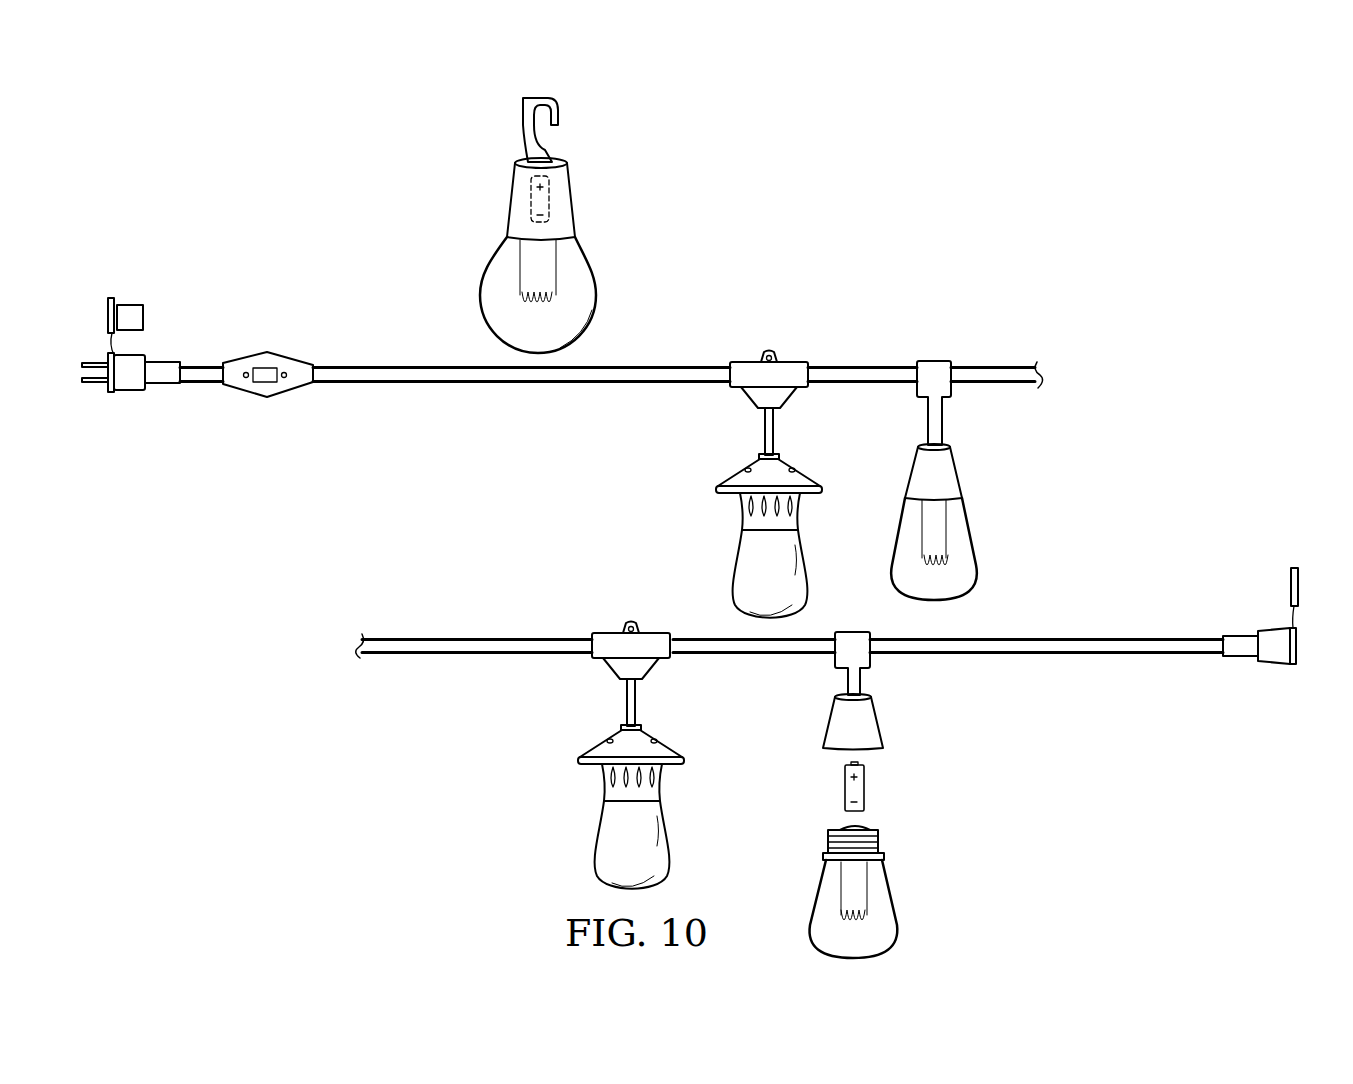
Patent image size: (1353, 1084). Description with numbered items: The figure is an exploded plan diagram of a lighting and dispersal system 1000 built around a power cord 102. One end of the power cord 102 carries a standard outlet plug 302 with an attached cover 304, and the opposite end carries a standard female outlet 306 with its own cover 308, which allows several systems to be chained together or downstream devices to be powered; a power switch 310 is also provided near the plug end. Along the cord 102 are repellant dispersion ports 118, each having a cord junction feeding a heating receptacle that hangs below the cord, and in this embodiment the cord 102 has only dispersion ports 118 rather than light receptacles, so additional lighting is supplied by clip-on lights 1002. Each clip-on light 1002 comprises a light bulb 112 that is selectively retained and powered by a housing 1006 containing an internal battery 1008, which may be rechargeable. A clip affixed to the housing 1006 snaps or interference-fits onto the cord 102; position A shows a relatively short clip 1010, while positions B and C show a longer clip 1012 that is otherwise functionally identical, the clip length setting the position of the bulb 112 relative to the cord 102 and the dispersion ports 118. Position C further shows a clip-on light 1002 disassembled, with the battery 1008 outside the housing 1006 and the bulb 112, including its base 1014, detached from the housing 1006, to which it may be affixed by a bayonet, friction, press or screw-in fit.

The lighting and dispersal system 1000 is at (1026, 286).
The power cord 102 is at (372, 366).
The repellant dispersion port 118 is at (782, 333).
The outlet plug 302 is at (110, 395).
The cover 304 is at (128, 305).
The female outlet 306 is at (1292, 670).
The cover 308 is at (1296, 568).
The power switch 310 is at (250, 353).
The clip-on light 1002 is at (583, 184).
The housing 1006 is at (515, 200).
The battery 1008 is at (565, 212).
The clip 1010 is at (540, 97).
The clip 1012 is at (945, 427).
The bulb base 1014 is at (880, 842).
The light bulb 112 is at (598, 295).
The position A is at (393, 410).
The position B is at (1068, 448).
The position C is at (990, 804).